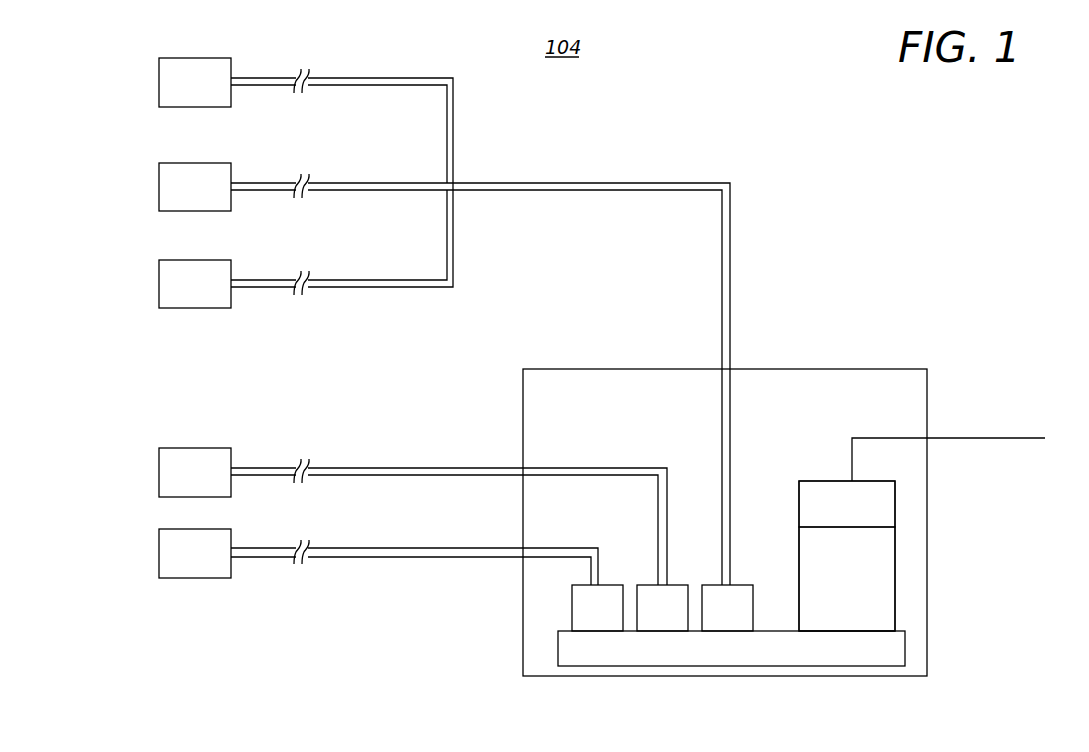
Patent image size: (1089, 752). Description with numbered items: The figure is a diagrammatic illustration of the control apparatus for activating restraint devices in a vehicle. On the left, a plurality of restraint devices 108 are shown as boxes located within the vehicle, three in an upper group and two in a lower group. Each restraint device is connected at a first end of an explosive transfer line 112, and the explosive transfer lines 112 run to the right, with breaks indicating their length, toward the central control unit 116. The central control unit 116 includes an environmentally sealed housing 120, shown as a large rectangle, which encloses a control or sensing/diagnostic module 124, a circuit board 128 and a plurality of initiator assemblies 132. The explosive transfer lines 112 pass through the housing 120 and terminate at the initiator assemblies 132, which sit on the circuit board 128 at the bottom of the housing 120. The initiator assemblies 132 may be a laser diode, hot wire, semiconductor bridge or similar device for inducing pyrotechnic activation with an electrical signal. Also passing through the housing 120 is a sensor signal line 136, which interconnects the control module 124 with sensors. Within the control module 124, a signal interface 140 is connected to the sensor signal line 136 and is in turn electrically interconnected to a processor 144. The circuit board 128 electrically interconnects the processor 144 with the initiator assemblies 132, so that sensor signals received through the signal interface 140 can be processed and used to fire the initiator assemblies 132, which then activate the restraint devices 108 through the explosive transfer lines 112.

The restraint devices 108 is at (167, 75).
The explosive transfer lines 112 is at (613, 188).
The central control unit 116 is at (805, 338).
The housing 120 is at (915, 368).
The control module 124 is at (902, 560).
The circuit board 128 is at (845, 647).
The initiator assemblies 132 is at (733, 612).
The sensor signal line 136 is at (1010, 438).
The signal interface 140 is at (885, 511).
The processor 144 is at (885, 612).